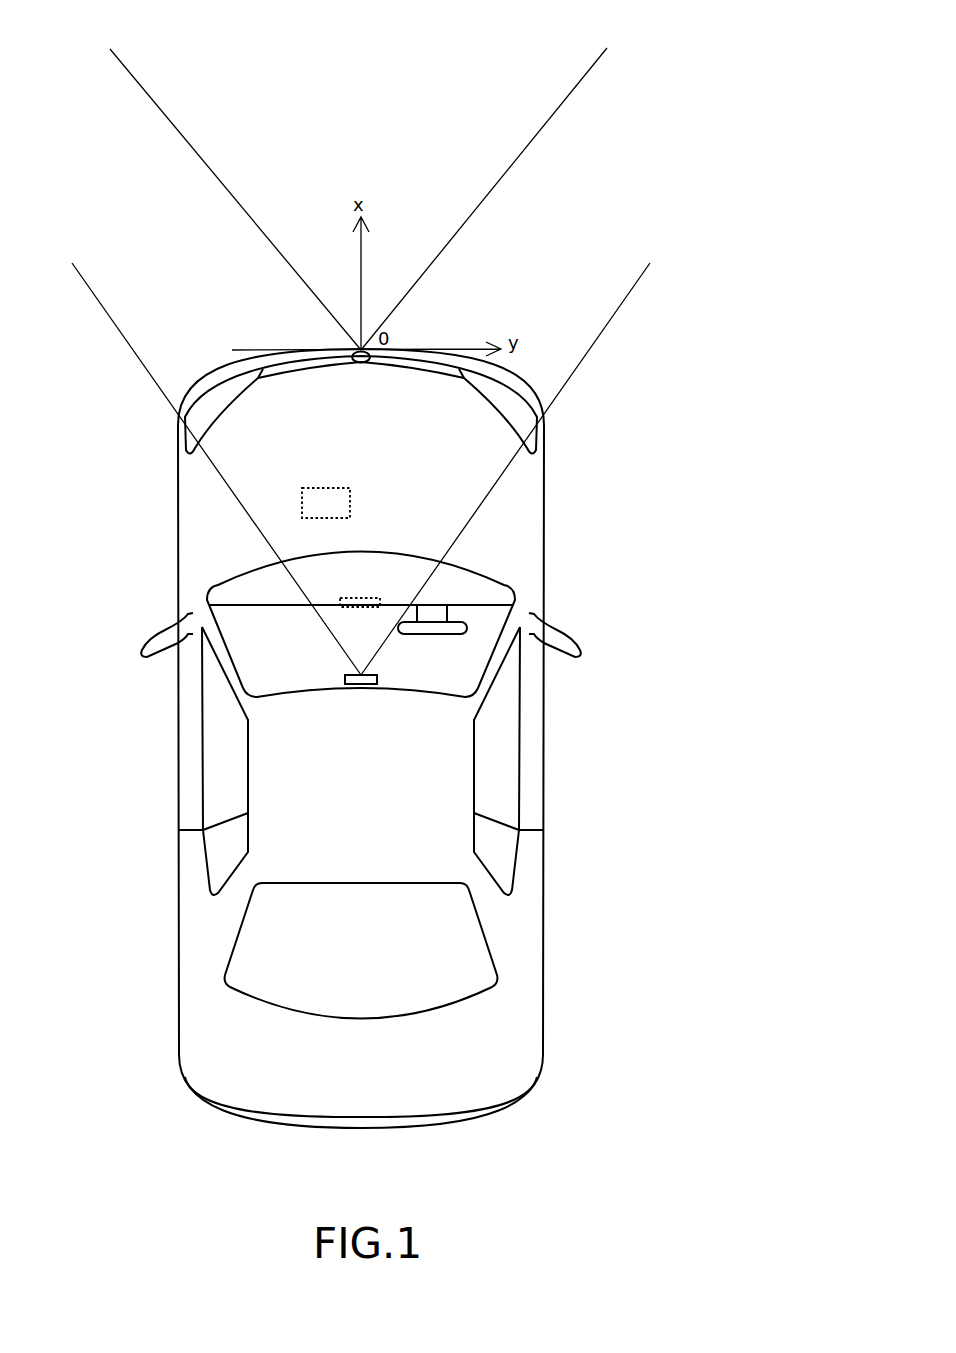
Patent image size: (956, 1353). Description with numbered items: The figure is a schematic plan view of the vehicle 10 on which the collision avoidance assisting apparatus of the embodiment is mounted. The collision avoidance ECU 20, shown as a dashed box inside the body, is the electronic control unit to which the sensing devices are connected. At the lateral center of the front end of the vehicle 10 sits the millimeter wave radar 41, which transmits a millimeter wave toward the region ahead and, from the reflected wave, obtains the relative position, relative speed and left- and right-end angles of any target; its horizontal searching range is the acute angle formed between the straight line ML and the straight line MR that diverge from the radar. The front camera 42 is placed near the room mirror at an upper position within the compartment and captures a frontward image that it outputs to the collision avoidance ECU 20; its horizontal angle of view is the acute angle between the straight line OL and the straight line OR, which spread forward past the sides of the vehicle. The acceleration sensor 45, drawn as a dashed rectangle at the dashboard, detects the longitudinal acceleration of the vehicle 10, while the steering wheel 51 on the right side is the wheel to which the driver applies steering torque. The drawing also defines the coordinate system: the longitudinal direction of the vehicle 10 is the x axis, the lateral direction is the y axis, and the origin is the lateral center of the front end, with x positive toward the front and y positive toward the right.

The vehicle 10 is at (180, 763).
The collision avoidance ECU 20 is at (302, 503).
The millimeter wave radar 41 is at (352, 355).
The front camera 42 is at (377, 679).
The acceleration sensor 45 is at (373, 597).
The steering wheel 51 is at (467, 627).
The straight line ML is at (169, 120).
The straight line MR is at (565, 100).
The straight line OL is at (139, 360).
The straight line OR is at (595, 338).